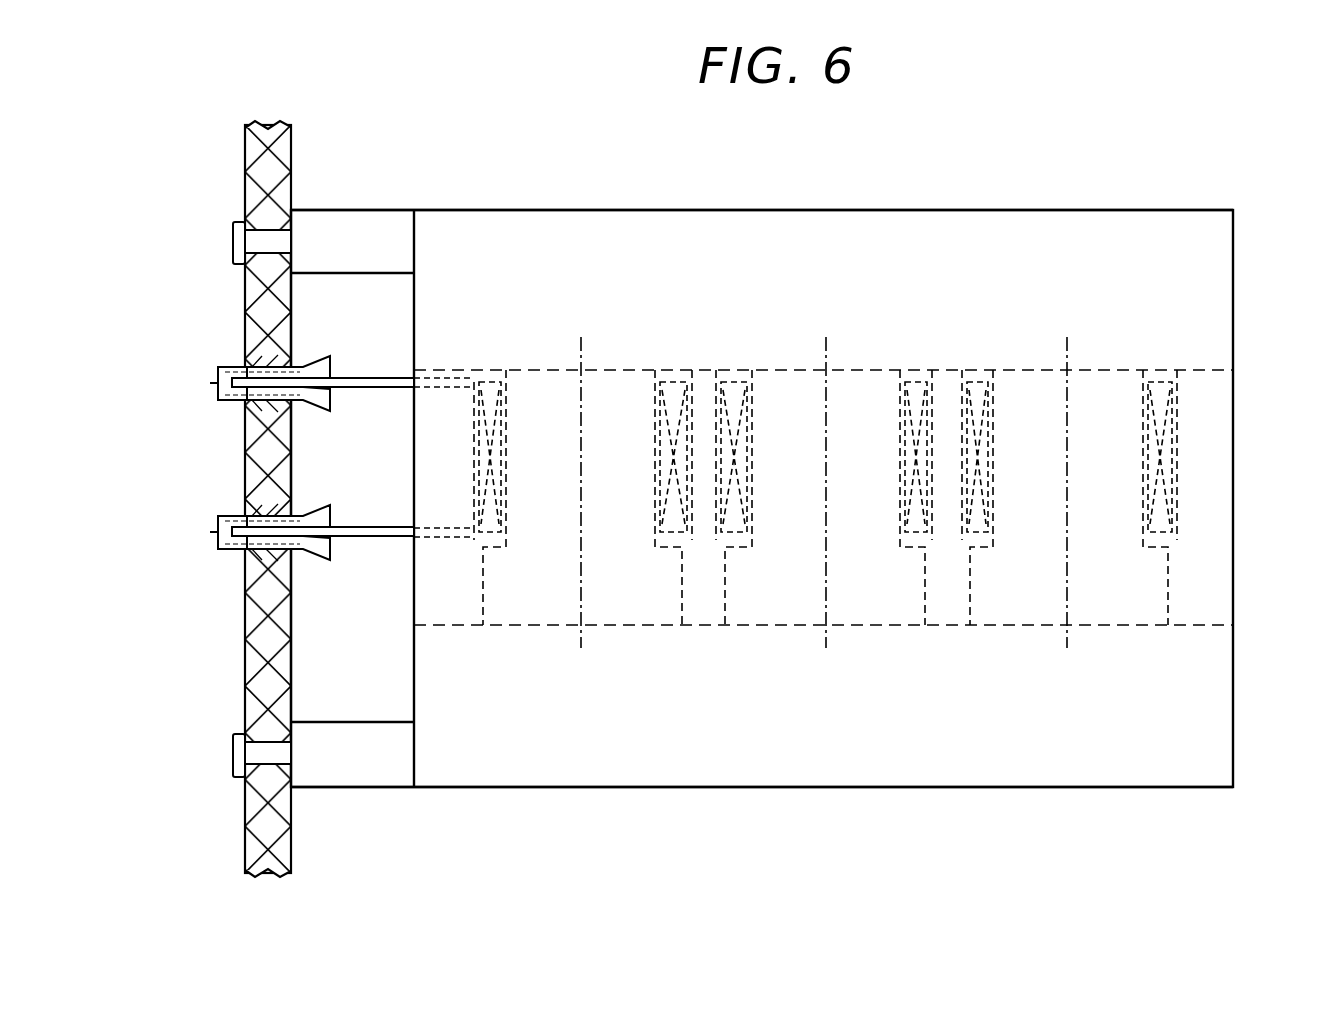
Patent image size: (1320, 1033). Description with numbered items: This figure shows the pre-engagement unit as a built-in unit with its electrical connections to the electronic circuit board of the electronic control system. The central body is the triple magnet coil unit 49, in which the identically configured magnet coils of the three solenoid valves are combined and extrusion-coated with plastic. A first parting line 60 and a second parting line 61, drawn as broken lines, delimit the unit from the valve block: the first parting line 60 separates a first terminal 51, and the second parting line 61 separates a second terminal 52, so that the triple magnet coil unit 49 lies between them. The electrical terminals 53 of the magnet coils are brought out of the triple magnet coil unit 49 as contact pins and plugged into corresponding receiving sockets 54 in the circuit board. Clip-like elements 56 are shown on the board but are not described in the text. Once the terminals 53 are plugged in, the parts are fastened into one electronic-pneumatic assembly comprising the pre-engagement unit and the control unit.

The triple magnet coil unit 49 is at (800, 498).
The first terminal 51 is at (1213, 285).
The second terminal 52 is at (1222, 725).
The electrical terminals 53 is at (383, 395).
The receiving sockets 54 is at (218, 383).
The clip 56 is at (233, 245).
The first parting line 60 is at (1213, 372).
The second parting line 61 is at (1213, 620).